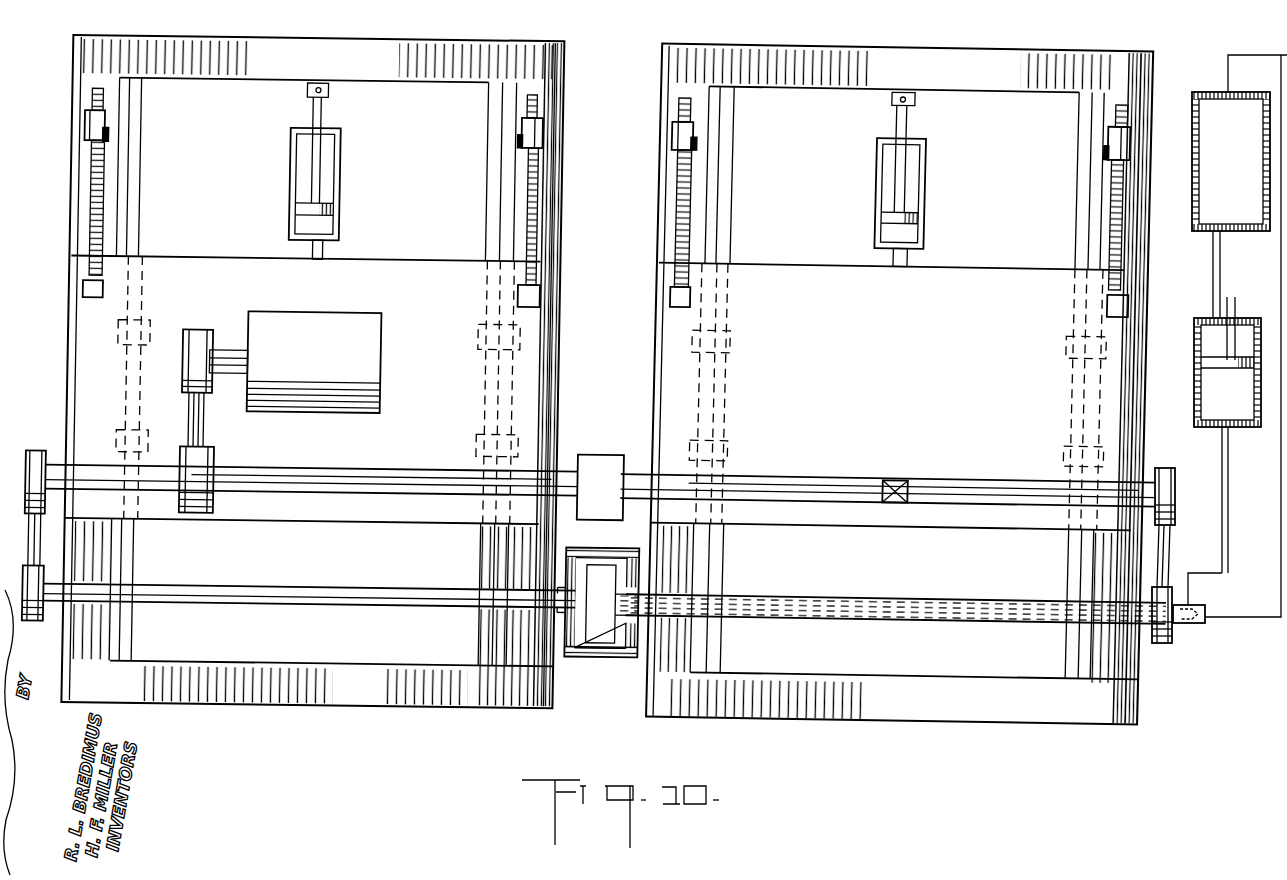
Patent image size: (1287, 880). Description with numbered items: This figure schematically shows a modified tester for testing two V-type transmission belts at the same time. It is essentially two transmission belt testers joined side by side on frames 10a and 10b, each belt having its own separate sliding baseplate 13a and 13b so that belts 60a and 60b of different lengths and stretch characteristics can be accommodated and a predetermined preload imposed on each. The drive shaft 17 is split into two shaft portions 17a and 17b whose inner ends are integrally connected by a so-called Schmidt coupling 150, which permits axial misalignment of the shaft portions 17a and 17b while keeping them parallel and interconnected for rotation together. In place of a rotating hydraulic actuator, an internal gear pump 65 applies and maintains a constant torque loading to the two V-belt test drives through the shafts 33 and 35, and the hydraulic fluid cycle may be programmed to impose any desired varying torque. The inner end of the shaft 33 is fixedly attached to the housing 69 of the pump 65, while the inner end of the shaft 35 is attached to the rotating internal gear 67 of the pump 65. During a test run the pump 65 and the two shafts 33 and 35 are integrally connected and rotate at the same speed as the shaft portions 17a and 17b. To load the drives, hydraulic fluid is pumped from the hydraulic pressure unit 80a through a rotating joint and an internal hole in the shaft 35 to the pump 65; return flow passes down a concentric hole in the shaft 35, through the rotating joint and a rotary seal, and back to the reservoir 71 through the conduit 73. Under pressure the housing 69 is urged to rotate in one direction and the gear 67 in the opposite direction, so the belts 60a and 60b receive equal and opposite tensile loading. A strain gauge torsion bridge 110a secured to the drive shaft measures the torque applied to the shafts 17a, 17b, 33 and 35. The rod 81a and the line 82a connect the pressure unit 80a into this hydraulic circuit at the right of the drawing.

The frame 10a is at (334, 66).
The frame 10b is at (935, 54).
The sliding baseplate 13a is at (334, 294).
The sliding baseplate 13b is at (927, 292).
The drive shaft 17 is at (343, 448).
The shaft portion 17a is at (382, 467).
The shaft portion 17b is at (813, 474).
The shaft 33 is at (294, 583).
The shaft 35 is at (882, 596).
The belt 60a is at (36, 520).
The belt 60b is at (1166, 548).
The internal gear pump 65 is at (626, 530).
The rotating internal gear 67 is at (602, 650).
The housing 69 is at (578, 650).
The reservoir 71 is at (1243, 172).
The conduit 73 is at (1253, 618).
The hydraulic pressure unit 80a is at (1190, 372).
The piston rod 81a is at (1210, 425).
The supply rod 82a is at (1198, 345).
The strain gauge torsion bridge 110a is at (903, 452).
The Schmidt coupling 150 is at (622, 494).